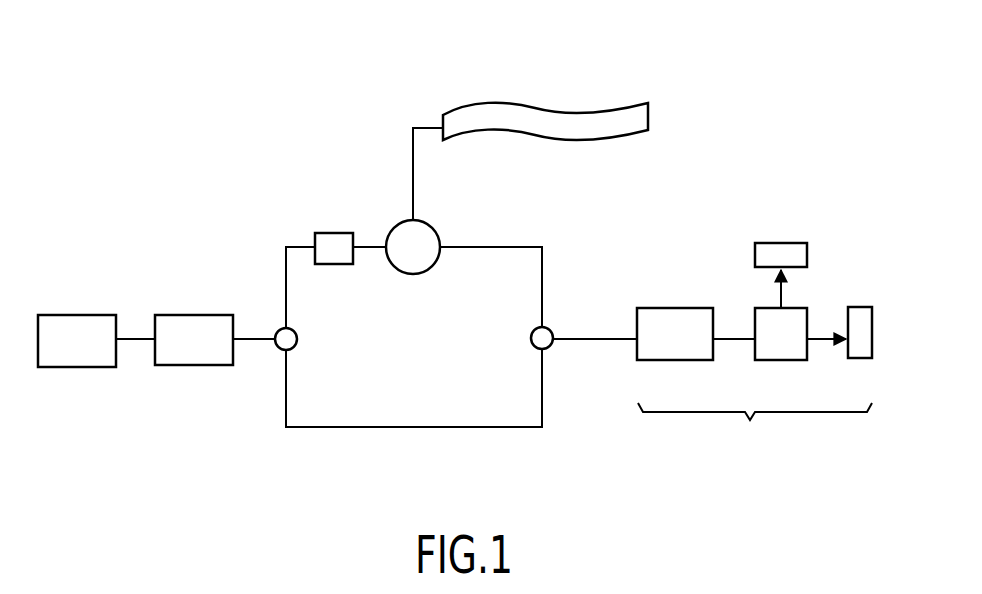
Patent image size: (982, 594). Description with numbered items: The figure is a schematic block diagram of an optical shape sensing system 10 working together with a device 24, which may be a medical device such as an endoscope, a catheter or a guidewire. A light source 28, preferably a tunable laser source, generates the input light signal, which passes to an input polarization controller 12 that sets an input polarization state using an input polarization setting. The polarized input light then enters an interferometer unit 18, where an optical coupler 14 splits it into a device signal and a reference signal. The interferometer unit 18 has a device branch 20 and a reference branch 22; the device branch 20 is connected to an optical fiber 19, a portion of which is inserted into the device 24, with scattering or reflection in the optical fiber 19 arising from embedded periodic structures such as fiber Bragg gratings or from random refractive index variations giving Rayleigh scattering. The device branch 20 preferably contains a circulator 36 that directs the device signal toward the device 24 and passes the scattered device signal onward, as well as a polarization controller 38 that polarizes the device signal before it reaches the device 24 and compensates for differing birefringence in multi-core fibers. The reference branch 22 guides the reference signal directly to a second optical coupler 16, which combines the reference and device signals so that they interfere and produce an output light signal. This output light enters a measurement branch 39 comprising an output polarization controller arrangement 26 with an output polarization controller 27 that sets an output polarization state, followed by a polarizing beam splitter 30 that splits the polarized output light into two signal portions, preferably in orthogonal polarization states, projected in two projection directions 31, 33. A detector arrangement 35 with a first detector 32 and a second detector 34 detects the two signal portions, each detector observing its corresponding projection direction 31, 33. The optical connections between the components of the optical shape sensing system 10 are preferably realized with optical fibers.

The optical shape sensing system 10 is at (198, 174).
The input polarization controller 12 is at (196, 366).
The optical coupler 14 is at (298, 336).
The optical coupler 16 is at (531, 338).
The interferometer unit 18 is at (327, 442).
The optical fiber 19 is at (426, 127).
The device branch 20 is at (495, 247).
The reference branch 22 is at (415, 428).
The device 24 is at (582, 111).
The output polarization controller arrangement 26 is at (643, 265).
The output polarization controller 27 is at (677, 308).
The light source 28 is at (80, 368).
The polarizing beam splitter 30 is at (766, 308).
The projection direction 31 is at (822, 340).
The first detector 32 is at (862, 307).
The projection direction 33 is at (784, 291).
The second detector 34 is at (781, 243).
The detector arrangement 35 is at (829, 218).
The circulator 36 is at (396, 232).
The polarization controller 38 is at (335, 233).
The measurement branch 39 is at (755, 428).